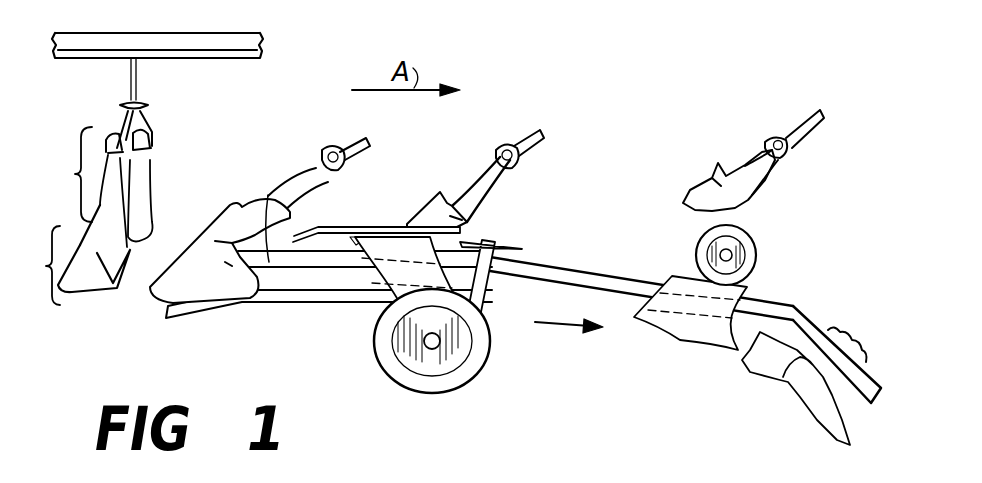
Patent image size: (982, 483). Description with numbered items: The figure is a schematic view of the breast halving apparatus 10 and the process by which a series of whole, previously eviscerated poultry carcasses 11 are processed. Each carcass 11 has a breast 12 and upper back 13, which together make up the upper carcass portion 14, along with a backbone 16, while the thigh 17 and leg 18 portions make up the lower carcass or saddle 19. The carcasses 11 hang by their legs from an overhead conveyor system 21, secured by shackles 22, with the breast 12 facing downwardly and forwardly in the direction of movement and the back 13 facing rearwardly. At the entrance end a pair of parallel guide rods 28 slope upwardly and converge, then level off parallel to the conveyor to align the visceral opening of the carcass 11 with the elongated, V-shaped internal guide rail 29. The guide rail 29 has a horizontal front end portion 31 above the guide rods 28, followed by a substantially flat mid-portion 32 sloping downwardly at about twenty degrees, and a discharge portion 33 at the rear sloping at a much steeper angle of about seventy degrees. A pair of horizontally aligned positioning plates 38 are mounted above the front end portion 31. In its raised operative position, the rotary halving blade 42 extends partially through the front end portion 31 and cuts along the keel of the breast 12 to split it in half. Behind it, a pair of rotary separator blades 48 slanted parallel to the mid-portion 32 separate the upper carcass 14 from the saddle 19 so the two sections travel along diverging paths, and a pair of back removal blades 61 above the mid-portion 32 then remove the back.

The breast halving apparatus 10 is at (260, 128).
The carcass 11 is at (86, 328).
The breast 12 is at (98, 290).
The upper back 13 is at (72, 232).
The upper carcass portion 14 is at (742, 362).
The backbone 16 is at (850, 306).
The thigh 17 is at (150, 222).
The leg 18 is at (145, 183).
The saddle 19 is at (78, 175).
The overhead conveyor system 21 is at (202, 42).
The shackle 22 is at (348, 150).
The guide rod 28 is at (265, 296).
The internal guide rail 29 is at (306, 288).
The front end portion 31 is at (272, 180).
The mid-portion 32 is at (606, 280).
The discharge portion 33 is at (806, 318).
The positioning plate 38 is at (356, 228).
The rotary halving blade 42 is at (406, 384).
The rotary separator blade 48 is at (512, 248).
The back removal blade 61 is at (738, 243).